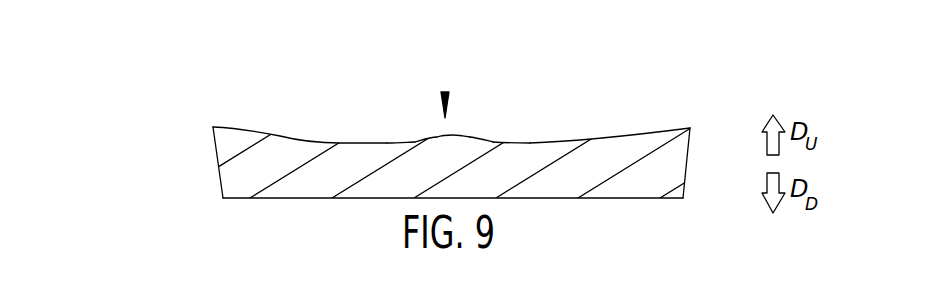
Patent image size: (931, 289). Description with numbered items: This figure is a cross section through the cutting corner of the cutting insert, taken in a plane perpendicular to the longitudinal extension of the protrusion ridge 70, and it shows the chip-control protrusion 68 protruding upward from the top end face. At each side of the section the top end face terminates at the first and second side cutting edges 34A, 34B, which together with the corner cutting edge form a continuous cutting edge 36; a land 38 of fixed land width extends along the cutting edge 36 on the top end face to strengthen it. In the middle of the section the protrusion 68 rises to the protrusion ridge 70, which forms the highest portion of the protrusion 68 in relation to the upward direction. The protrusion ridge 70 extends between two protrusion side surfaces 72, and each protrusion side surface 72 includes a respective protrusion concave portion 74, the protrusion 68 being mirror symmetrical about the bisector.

The first side cutting edge 34A is at (691, 128).
The second side cutting edge 34B is at (213, 127).
The continuous cutting edge 36 is at (461, 116).
The land 38 is at (226, 127).
The protrusion 68 is at (448, 92).
The protrusion ridge 70 is at (455, 135).
The protrusion side surfaces 72 is at (437, 137).
The protrusion concave portion 74 is at (415, 142).